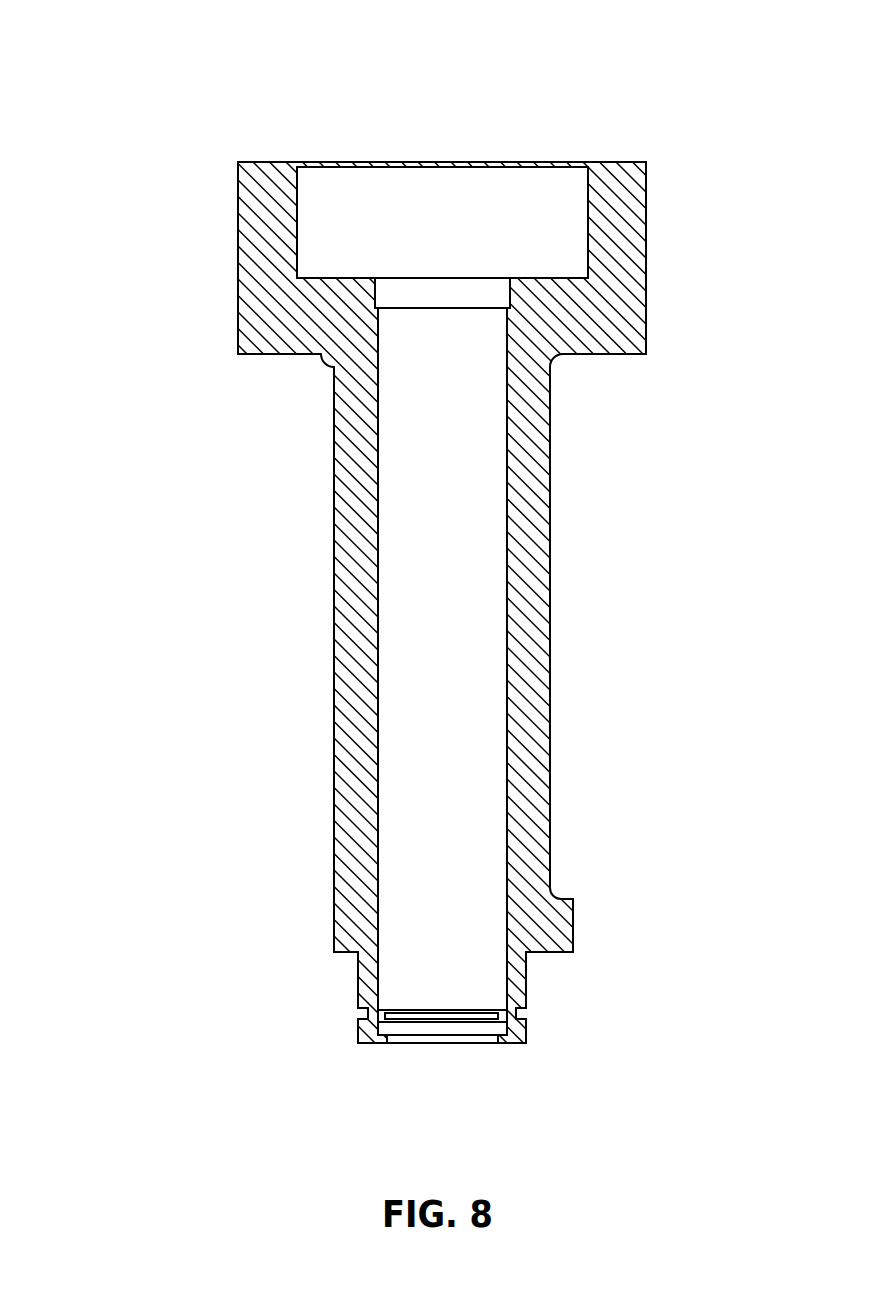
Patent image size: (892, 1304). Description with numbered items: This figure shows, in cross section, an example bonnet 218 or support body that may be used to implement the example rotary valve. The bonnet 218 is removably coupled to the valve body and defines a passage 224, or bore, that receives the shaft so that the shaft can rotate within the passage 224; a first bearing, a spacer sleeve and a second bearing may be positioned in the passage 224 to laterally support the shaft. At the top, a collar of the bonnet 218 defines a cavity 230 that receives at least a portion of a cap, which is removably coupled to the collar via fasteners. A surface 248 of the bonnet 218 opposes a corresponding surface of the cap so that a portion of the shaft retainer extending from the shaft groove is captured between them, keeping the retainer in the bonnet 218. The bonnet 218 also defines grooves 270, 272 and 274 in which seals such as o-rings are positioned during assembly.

The bonnet 218 is at (179, 75).
The cavity 230 is at (295, 207).
The opposing surface 248 is at (553, 278).
The groove 274 is at (402, 305).
The passage 224 is at (403, 543).
The groove 270 is at (367, 1016).
The groove 272 is at (497, 1031).